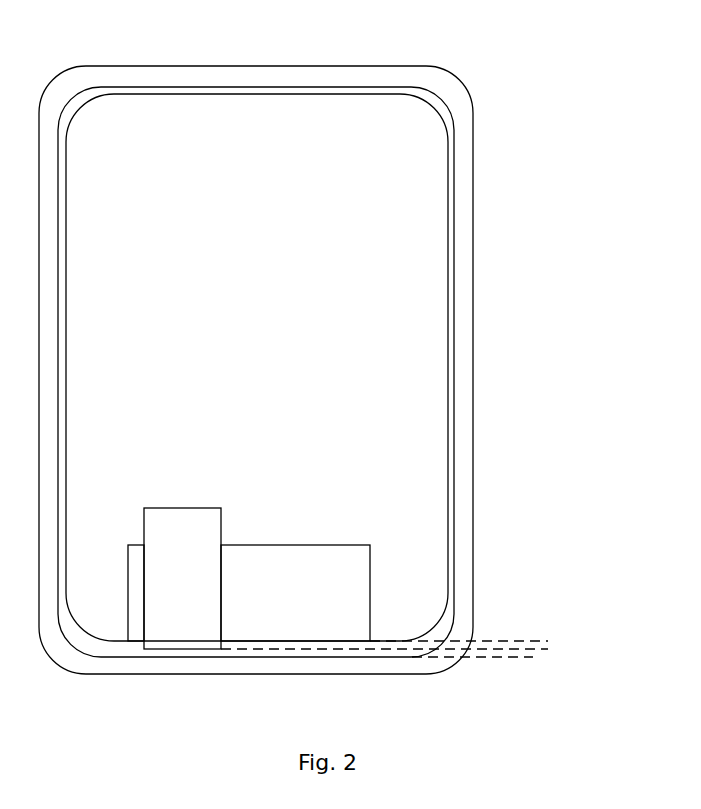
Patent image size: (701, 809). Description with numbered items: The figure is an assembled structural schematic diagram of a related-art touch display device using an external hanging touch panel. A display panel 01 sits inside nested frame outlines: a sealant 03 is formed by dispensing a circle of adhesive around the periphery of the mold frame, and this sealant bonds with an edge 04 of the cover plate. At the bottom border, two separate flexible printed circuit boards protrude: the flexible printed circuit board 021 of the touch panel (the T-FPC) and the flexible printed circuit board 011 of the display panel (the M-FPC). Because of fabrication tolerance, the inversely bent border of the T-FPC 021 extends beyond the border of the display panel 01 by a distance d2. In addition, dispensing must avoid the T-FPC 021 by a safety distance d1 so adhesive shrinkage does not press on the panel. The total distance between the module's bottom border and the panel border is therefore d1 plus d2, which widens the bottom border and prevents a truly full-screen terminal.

The edge of cover plate 04 is at (473, 113).
The sealant 03 is at (460, 342).
The display panel 01 is at (427, 219).
The flexible printed circuit board (T-FPC) 021 is at (200, 505).
The flexible printed circuit board (M-FPC) 011 is at (293, 573).
The distance d2 is at (522, 643).
The safety distance d1 is at (527, 655).